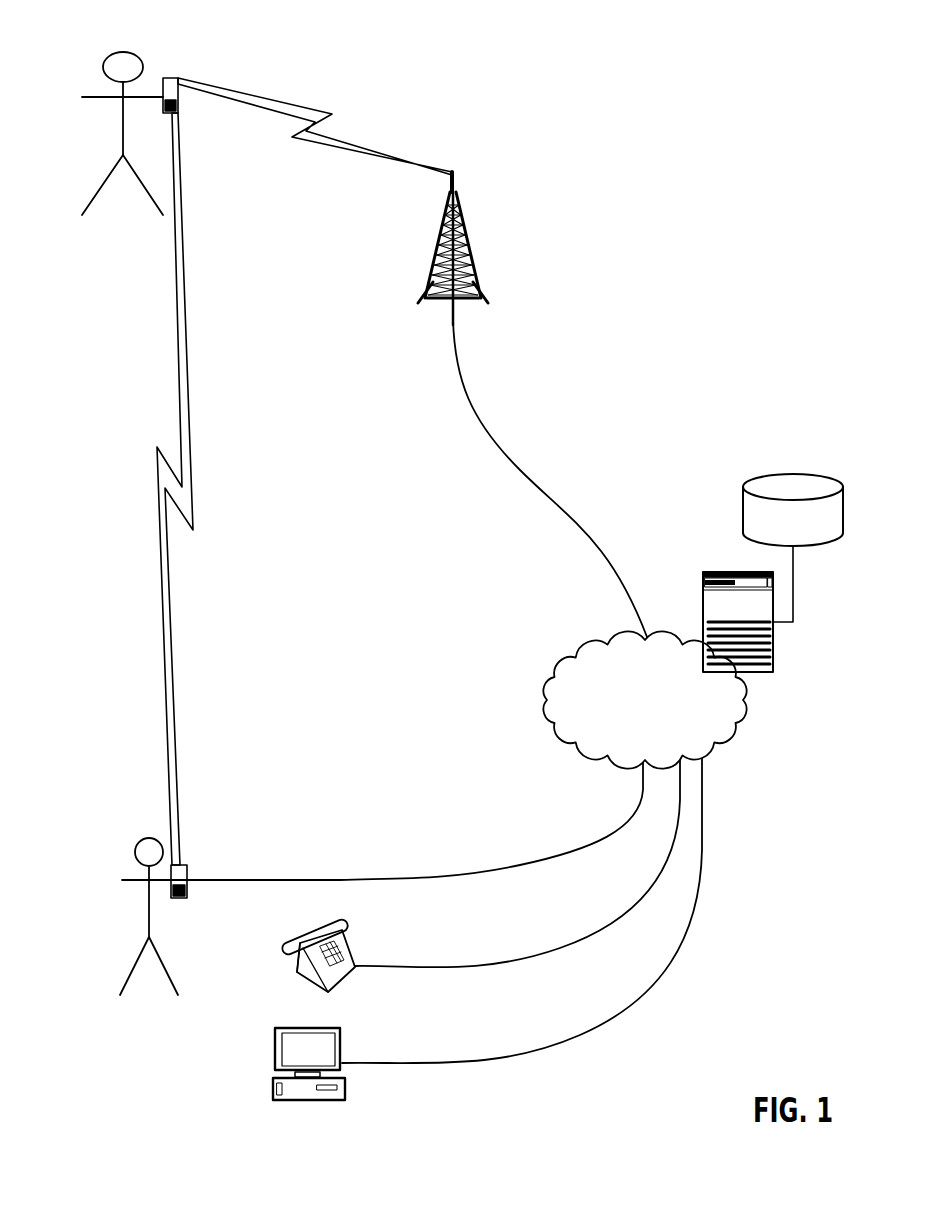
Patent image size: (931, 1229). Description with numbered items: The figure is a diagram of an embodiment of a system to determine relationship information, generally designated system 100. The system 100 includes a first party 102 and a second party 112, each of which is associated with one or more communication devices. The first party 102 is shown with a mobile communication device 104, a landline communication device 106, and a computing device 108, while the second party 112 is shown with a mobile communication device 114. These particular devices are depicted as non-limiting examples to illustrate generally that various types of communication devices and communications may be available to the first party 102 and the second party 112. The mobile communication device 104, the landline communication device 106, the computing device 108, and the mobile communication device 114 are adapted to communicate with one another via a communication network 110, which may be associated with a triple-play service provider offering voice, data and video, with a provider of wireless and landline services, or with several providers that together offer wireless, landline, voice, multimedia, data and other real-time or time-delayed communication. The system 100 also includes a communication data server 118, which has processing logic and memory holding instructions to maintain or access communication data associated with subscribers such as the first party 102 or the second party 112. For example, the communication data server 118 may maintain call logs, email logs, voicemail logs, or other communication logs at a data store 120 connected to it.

The system 100 is at (780, 267).
The first party 102 is at (148, 839).
The mobile communication device 104 is at (180, 898).
The landline communication device 106 is at (290, 978).
The computing device 108 is at (273, 1060).
The communication network 110 is at (546, 693).
The second party 112 is at (121, 50).
The mobile communication device 114 is at (175, 77).
The communication data server 118 is at (736, 572).
The data store 120 is at (792, 475).